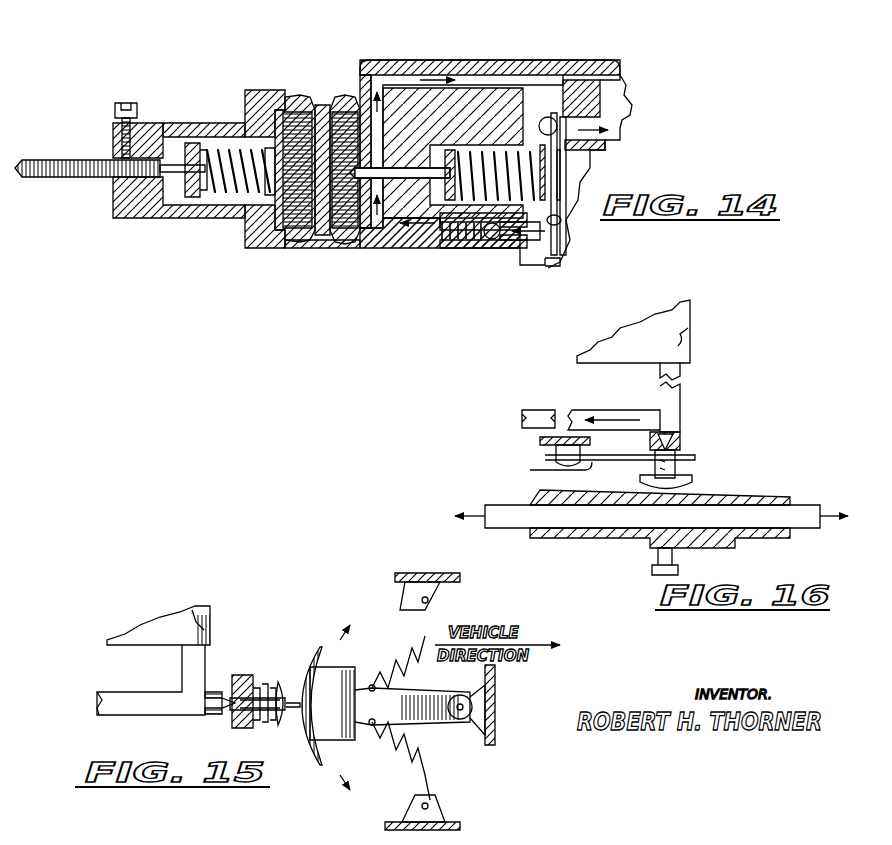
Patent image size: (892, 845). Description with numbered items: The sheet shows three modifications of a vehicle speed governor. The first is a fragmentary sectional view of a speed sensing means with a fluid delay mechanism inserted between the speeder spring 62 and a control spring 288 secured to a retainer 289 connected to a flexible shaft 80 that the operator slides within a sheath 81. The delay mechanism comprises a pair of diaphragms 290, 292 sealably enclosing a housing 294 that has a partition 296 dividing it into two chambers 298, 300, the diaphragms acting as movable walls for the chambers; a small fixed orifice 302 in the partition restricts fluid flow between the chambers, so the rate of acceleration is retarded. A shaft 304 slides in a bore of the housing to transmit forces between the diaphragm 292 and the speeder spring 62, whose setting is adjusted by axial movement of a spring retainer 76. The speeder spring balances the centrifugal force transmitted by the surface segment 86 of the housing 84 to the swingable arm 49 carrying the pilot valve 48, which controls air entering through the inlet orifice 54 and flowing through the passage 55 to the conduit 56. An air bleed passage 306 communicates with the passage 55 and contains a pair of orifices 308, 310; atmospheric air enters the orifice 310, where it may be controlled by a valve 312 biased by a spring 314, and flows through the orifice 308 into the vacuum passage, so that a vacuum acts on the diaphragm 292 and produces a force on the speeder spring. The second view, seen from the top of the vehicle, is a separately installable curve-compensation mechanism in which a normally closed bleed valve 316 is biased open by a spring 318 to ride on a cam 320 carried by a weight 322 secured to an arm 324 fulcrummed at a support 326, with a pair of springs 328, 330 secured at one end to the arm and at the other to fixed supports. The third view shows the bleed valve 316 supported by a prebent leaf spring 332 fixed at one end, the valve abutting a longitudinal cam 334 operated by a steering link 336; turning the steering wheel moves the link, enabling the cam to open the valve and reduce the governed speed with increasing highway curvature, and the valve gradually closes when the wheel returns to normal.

In FIG. 14, the sheath 81 is at (38, 168).
In FIG. 14, the flexible shaft 80 is at (167, 120).
In FIG. 14, the diaphragm 290 is at (250, 118).
In FIG. 14, the retainer 289 is at (185, 195).
In FIG. 14, the control spring 288 is at (228, 145).
In FIG. 14, the partition 296 is at (295, 95).
In FIG. 14, the diaphragm 292 is at (345, 110).
In FIG. 14, the fixed orifice 302 is at (348, 108).
In FIG. 14, the housing 294 is at (322, 248).
In FIG. 14, the chamber 298 is at (282, 245).
In FIG. 14, the chamber 300 is at (345, 245).
In FIG. 14, the air bleed passage 306 is at (388, 72).
In FIG. 14, the shaft 304 is at (420, 150).
In FIG. 14, the spring retainer 76 is at (462, 150).
In FIG. 14, the pilot valve 48 is at (549, 112).
In FIG. 14, the orifice 308 is at (541, 122).
In FIG. 14, the inlet orifice 54 is at (560, 112).
In FIG. 14, the passage 55 is at (620, 130).
In FIG. 14, the speeder spring 62 is at (562, 180).
In FIG. 14, the swingable arm 49 is at (561, 222).
In FIG. 14, the surface segment 86 is at (562, 258).
In FIG. 14, the spring 314 is at (465, 242).
In FIG. 14, the valve 312 is at (492, 240).
In FIG. 14, the orifice 310 is at (530, 262).
In FIG. 16, the housing 84 is at (688, 333).
In FIG. 15, the housing 84 is at (178, 620).
In FIG. 16, the conduit 56 is at (690, 395).
In FIG. 15, the conduit 56 is at (118, 700).
In FIG. 16, the bleed valve 316 is at (680, 455).
In FIG. 15, the bleed valve 316 is at (230, 708).
In FIG. 16, the leaf spring 332 is at (590, 470).
In FIG. 16, the longitudinal cam 334 is at (740, 492).
In FIG. 16, the steering link 336 is at (505, 500).
In FIG. 15, the spring 318 is at (262, 680).
In FIG. 15, the cam 320 is at (305, 670).
In FIG. 15, the weight 322 is at (350, 667).
In FIG. 15, the support 326 is at (470, 690).
In FIG. 15, the arm 324 is at (438, 722).
In FIG. 15, the spring 328 is at (435, 620).
In FIG. 15, the spring 330 is at (420, 783).